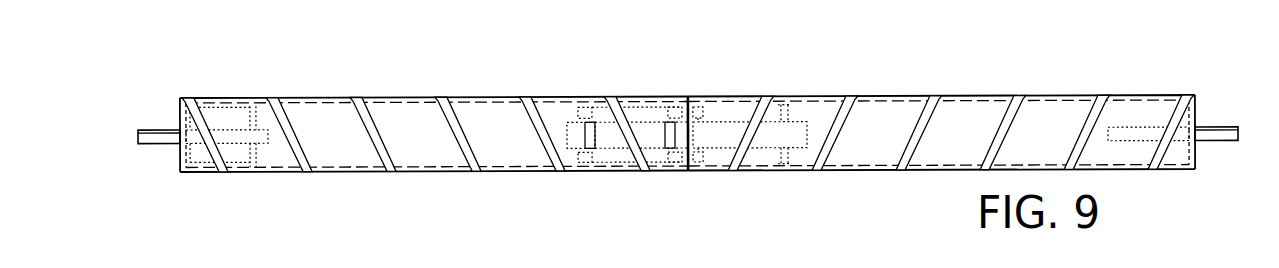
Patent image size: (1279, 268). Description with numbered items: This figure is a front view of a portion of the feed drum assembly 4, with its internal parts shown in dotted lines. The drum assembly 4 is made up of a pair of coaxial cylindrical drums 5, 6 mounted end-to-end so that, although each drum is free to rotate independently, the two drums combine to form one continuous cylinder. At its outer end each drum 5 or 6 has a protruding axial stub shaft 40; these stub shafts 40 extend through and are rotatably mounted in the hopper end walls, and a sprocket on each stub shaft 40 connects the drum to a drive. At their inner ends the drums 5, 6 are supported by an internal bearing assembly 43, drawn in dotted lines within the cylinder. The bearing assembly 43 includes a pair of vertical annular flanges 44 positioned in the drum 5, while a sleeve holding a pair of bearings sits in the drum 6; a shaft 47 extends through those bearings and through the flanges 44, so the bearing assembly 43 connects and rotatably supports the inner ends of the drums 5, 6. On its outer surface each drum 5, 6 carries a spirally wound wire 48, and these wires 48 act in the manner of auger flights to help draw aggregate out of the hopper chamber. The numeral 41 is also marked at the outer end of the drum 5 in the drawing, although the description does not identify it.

The feed drum assembly 4 is at (693, 120).
The drum 5 is at (413, 97).
The drum 6 is at (976, 97).
The stub shaft 40 is at (162, 130).
The end bearing support 41 is at (257, 157).
The bearing assembly 43 is at (699, 134).
The annular flanges 44 is at (787, 158).
The shaft 47 is at (758, 148).
The spirally wound wire 48 is at (1085, 105).